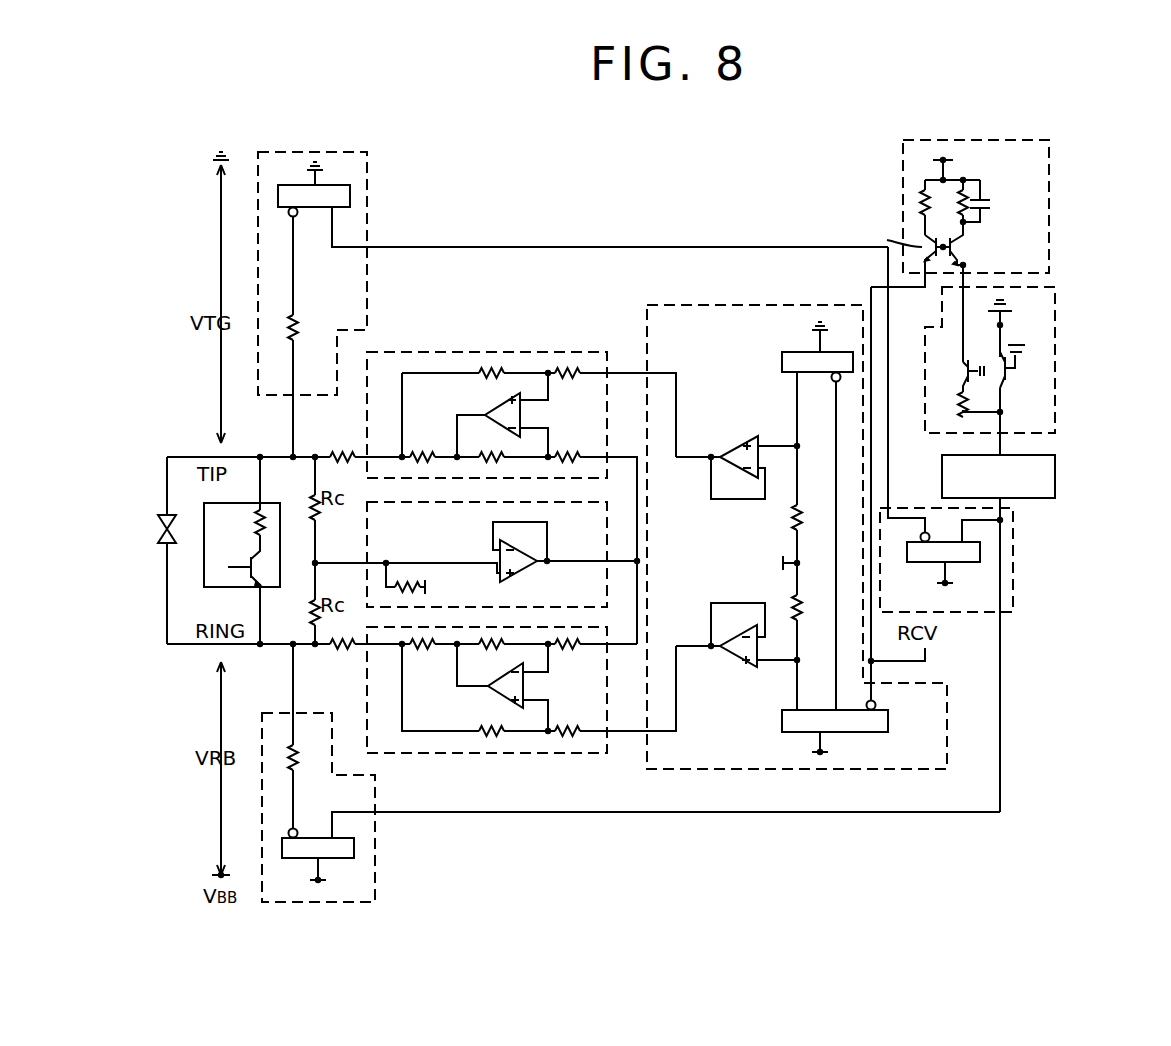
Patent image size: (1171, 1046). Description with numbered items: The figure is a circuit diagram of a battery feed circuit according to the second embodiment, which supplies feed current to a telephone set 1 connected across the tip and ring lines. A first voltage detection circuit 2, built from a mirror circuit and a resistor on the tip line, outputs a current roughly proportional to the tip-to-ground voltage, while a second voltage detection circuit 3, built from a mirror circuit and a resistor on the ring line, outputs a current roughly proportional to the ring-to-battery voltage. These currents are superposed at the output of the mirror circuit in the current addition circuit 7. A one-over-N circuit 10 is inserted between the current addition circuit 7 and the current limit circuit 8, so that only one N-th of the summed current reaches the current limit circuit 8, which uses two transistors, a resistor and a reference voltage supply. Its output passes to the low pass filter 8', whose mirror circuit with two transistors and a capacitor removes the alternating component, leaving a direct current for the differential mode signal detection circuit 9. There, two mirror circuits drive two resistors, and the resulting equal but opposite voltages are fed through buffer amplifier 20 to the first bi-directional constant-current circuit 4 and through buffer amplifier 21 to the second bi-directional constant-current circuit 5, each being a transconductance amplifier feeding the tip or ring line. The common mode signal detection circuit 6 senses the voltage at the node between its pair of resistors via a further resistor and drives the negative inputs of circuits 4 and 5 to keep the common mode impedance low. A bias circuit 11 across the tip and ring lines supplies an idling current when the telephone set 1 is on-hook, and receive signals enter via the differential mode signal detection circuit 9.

The telephone set 1 is at (155, 537).
The first voltage detection circuit 2 is at (367, 258).
The second voltage detection circuit 3 is at (375, 830).
The first bi-directional constant-current circuit 4 is at (422, 352).
The second bi-directional constant-current circuit 5 is at (520, 753).
The common mode signal detection circuit 6 is at (607, 549).
The current addition circuit 7 is at (1013, 575).
The current limit circuit 8 is at (1021, 371).
The low pass filter 8' is at (991, 251).
The differential mode signal detection circuit 9 is at (797, 570).
The 1/N circuit 10 is at (942, 483).
The bias circuit 11 is at (280, 565).
The buffer amplifier 20 is at (742, 447).
The buffer amplifier 21 is at (740, 667).